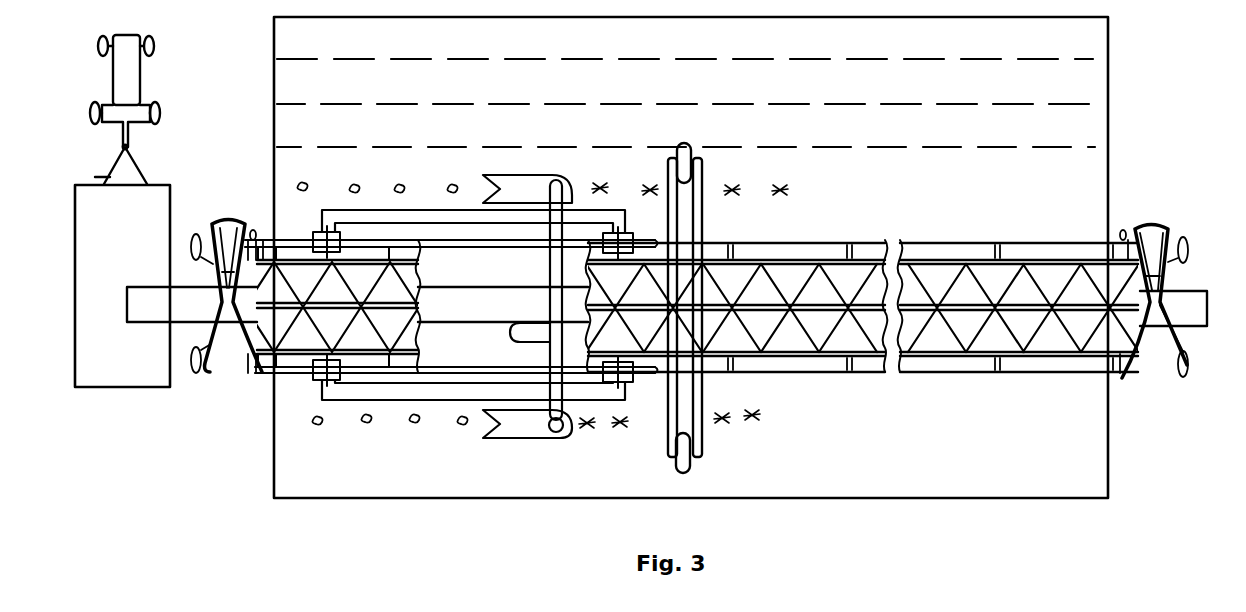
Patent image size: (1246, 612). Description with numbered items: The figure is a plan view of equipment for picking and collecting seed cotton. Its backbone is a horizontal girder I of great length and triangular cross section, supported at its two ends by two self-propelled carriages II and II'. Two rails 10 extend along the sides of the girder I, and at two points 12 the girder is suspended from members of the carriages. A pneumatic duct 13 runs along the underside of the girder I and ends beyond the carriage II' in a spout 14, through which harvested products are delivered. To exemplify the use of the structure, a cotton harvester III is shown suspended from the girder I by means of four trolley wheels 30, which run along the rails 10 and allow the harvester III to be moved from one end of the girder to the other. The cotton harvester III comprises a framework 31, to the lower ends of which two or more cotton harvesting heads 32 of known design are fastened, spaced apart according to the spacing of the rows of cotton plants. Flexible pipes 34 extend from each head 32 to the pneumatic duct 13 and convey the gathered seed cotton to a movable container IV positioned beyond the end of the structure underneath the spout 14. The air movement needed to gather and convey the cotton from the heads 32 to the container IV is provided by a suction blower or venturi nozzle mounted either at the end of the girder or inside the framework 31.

The rails 10 is at (810, 243).
The suspension points 12 is at (1162, 315).
The pneumatic duct 13 is at (460, 398).
The spout 14 is at (188, 308).
The trolley wheels 30 is at (632, 238).
The framework 31 is at (383, 395).
The cotton harvesting heads 32 is at (520, 427).
The flexible pipes 34 is at (550, 264).
The horizontal girder I is at (942, 343).
The self-propelled carriage II is at (1154, 331).
The self-propelled carriage II' is at (227, 328).
The cotton harvester III is at (443, 420).
The movable container IV is at (160, 193).